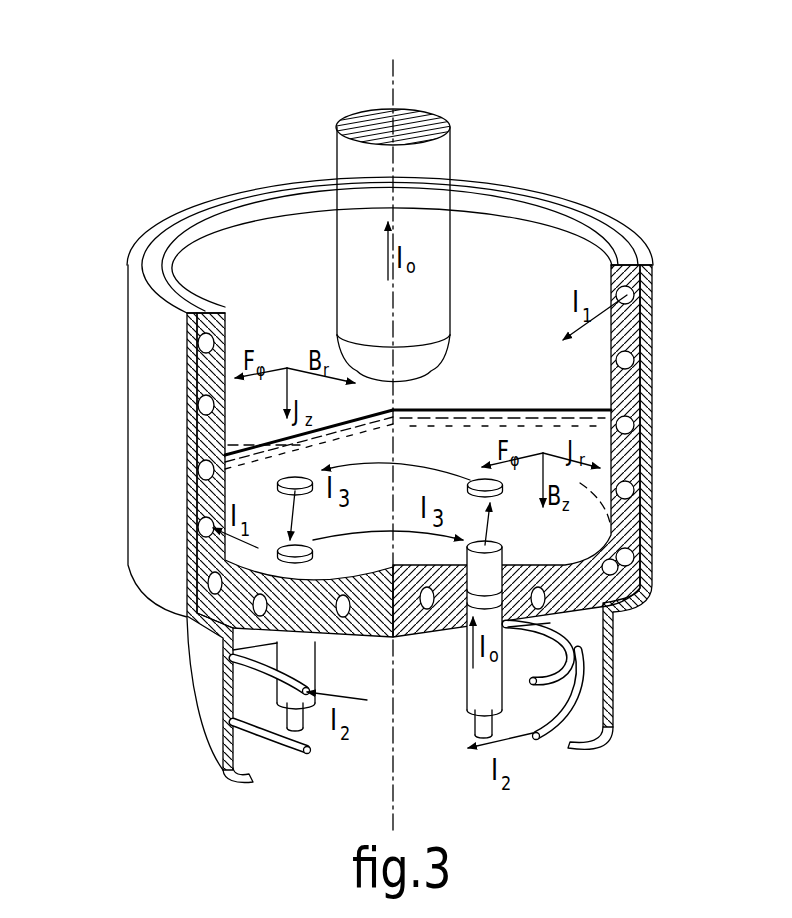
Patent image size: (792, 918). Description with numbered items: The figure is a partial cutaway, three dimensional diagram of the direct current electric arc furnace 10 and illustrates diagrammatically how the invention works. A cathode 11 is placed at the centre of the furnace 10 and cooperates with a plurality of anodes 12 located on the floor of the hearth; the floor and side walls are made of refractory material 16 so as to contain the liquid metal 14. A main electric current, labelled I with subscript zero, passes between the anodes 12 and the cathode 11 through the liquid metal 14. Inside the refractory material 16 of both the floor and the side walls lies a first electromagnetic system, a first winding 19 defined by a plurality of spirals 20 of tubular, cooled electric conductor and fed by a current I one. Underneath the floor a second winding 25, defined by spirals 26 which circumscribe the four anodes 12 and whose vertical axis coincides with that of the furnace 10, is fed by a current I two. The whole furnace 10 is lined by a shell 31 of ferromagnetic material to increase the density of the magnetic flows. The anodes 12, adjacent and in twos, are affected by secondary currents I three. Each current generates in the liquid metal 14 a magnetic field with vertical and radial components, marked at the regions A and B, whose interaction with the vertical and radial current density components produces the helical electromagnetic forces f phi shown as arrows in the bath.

The electric arc furnace 10 is at (523, 118).
The cathode 11 is at (360, 188).
The anodes 12 is at (487, 577).
The liquid metal 14 is at (513, 385).
The refractory material 16 is at (548, 222).
The first winding 19 is at (205, 311).
The spirals 20 is at (645, 287).
The second winding 25 is at (283, 754).
The spirals 26 is at (552, 728).
The shell 31 is at (150, 237).
The electrode zone A is at (410, 490).
The magnetic field region B is at (638, 424).